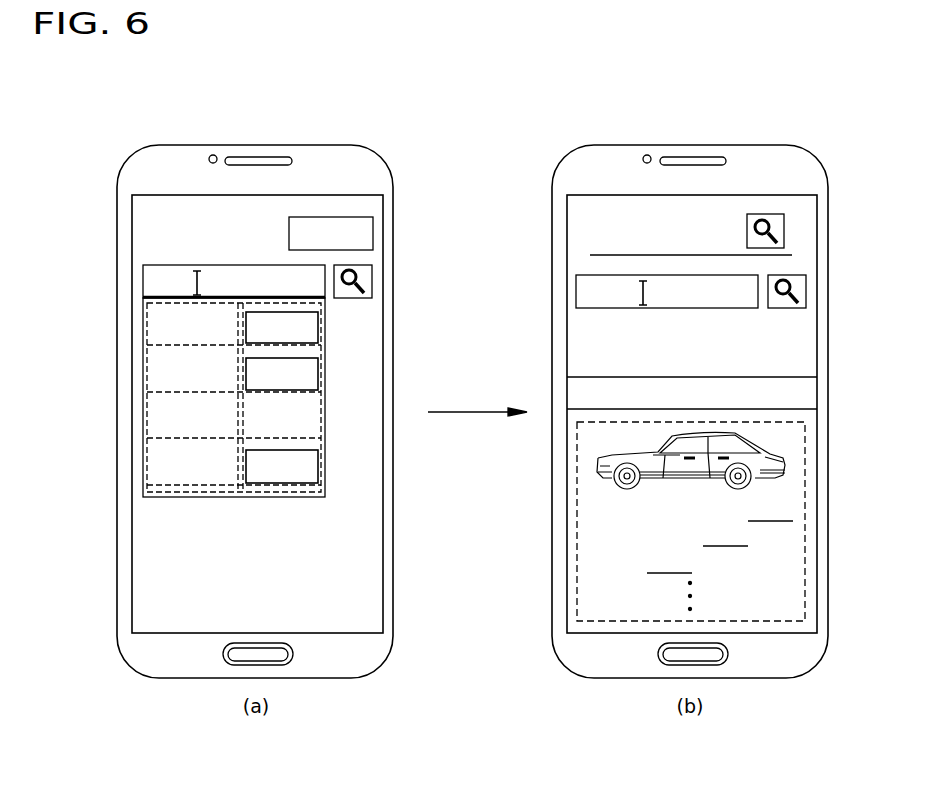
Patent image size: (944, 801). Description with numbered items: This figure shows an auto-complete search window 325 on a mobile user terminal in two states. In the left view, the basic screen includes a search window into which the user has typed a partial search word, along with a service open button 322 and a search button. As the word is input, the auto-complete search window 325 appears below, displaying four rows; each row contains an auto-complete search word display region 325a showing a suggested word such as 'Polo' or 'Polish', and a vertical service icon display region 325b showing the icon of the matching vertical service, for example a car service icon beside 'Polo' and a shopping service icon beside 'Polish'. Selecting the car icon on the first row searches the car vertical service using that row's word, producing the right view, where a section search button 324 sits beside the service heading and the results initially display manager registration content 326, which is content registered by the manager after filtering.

The service open button 322 is at (373, 233).
The section search button 324 is at (784, 233).
The auto-complete search window 325 is at (259, 397).
The auto-complete search word display region 325a is at (143, 325).
The vertical service icon display region 325b is at (325, 324).
The manager registration content 326 is at (805, 516).